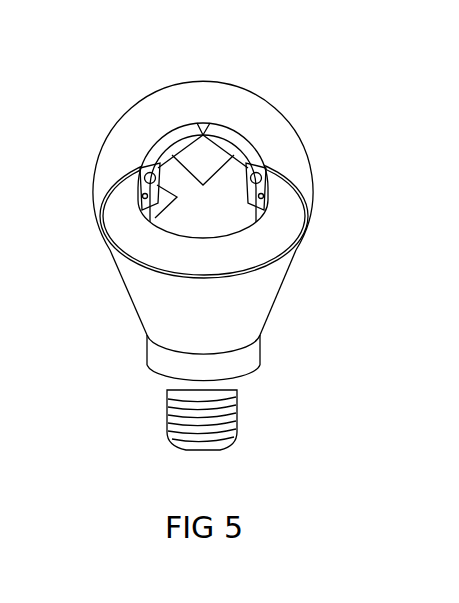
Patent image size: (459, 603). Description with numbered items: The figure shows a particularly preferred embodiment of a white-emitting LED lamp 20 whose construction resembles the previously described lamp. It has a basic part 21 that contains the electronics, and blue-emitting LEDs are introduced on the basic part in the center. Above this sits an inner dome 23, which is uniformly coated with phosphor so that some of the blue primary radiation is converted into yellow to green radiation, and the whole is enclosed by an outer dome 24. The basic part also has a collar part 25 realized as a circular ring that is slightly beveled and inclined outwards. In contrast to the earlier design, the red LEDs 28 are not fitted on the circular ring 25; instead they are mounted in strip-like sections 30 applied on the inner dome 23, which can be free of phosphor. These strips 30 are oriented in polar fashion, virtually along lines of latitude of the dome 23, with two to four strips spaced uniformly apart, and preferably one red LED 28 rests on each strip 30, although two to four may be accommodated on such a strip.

The LED lamp 20 is at (340, 176).
The basic part 21 is at (268, 312).
The inner dome 23 is at (168, 132).
The outer dome 24 is at (205, 83).
The collar part 25 is at (280, 237).
The LEDs 28 is at (254, 171).
The strip-like sections 30 is at (203, 133).